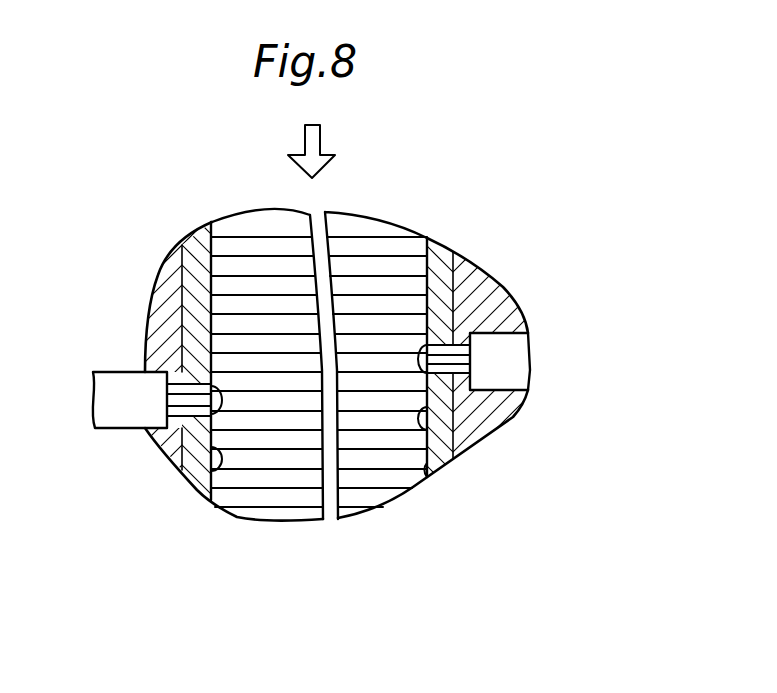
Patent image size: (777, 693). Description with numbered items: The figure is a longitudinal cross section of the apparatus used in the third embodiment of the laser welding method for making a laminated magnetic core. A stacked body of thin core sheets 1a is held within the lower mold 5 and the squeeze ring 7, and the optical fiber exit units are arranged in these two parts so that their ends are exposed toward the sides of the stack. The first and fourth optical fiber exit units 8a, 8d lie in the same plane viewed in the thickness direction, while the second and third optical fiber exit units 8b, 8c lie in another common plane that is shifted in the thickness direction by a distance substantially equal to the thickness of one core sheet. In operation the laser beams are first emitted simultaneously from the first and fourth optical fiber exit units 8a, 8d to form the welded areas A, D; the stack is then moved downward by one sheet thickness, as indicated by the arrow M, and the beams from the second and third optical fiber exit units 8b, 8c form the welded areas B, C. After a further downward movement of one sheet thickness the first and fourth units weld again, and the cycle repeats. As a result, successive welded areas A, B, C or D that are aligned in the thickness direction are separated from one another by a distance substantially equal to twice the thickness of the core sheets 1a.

The core sheets 1a is at (250, 242).
The lower mold 5 is at (488, 300).
The squeeze ring 7 is at (437, 260).
The first optical fiber exit unit 8a is at (526, 408).
The fourth optical fiber exit unit 8d is at (498, 373).
The third optical fiber exit unit 8c is at (148, 449).
The second optical fiber exit unit 8b is at (125, 415).
The welded area A is at (399, 474).
The welded area D is at (418, 420).
The welded area B is at (237, 507).
The welded area C is at (223, 405).
The pressing force direction M is at (320, 137).